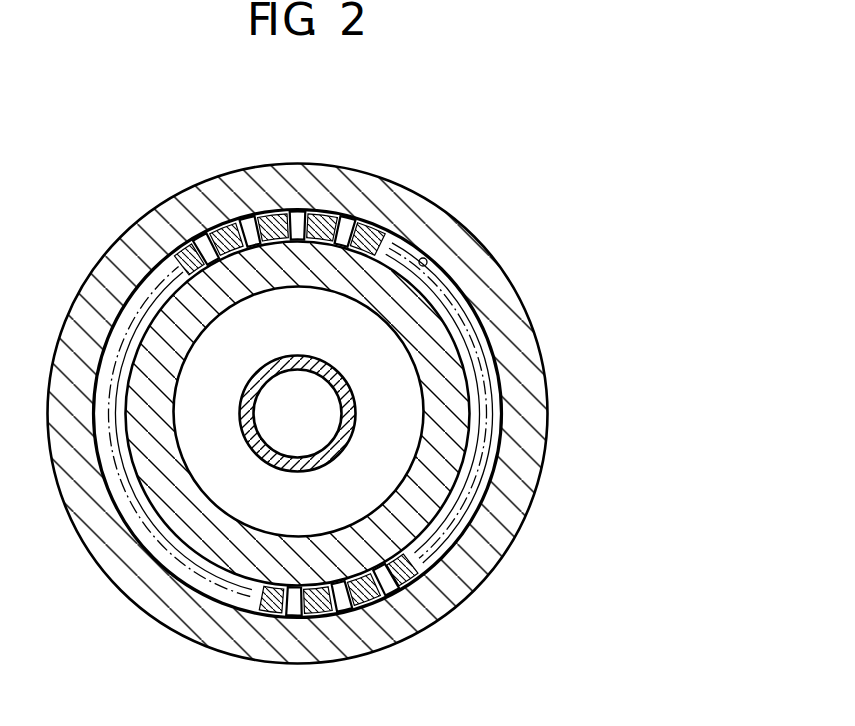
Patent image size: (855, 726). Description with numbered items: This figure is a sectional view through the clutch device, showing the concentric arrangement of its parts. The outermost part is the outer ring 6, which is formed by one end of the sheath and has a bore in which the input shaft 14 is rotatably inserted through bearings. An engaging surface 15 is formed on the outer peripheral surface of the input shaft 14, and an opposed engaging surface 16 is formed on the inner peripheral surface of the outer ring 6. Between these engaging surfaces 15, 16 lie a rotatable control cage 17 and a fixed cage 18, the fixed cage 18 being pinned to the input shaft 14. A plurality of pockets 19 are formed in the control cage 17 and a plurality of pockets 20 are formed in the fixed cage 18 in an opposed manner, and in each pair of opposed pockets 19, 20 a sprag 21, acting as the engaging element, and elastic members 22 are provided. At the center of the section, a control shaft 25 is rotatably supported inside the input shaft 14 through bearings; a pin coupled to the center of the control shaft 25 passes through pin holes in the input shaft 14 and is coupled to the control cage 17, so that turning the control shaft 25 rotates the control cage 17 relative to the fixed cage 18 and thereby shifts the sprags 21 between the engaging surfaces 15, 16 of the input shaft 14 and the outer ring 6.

The outer ring 6 is at (513, 342).
The input shaft 14 is at (443, 423).
The engaging surface 15 is at (433, 307).
The engaging surface 16 is at (427, 259).
The control cage 17 is at (378, 215).
The fixed cage 18 is at (392, 222).
The pockets 19 is at (310, 213).
The pockets 20 is at (290, 210).
The sprag 21 is at (207, 215).
The elastic members 22 is at (170, 220).
The control shaft 25 is at (343, 437).